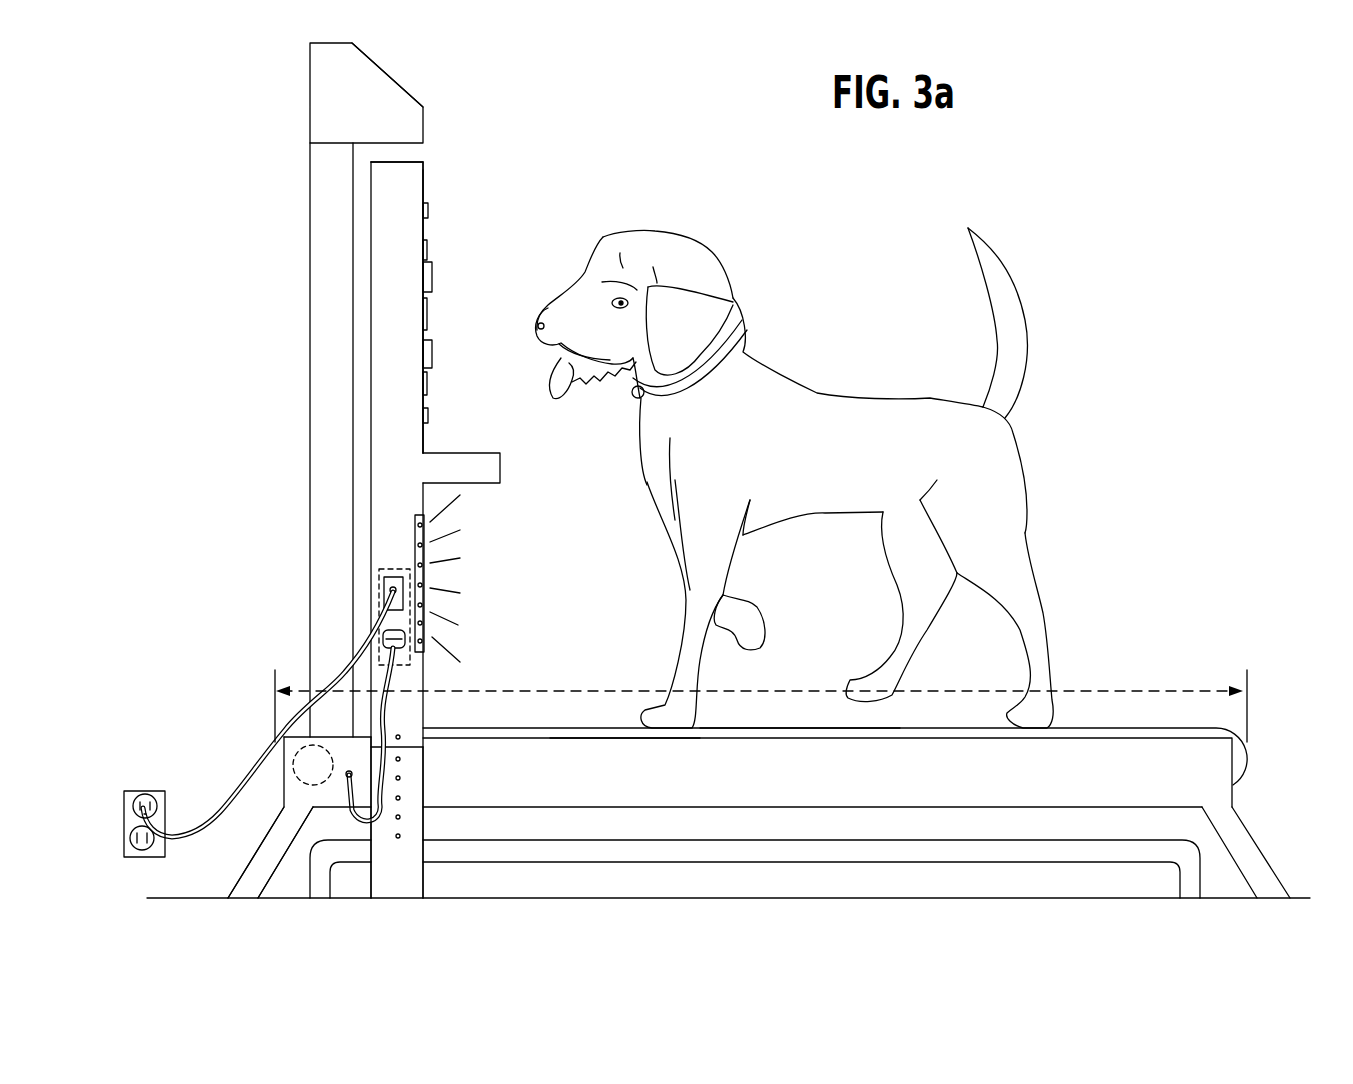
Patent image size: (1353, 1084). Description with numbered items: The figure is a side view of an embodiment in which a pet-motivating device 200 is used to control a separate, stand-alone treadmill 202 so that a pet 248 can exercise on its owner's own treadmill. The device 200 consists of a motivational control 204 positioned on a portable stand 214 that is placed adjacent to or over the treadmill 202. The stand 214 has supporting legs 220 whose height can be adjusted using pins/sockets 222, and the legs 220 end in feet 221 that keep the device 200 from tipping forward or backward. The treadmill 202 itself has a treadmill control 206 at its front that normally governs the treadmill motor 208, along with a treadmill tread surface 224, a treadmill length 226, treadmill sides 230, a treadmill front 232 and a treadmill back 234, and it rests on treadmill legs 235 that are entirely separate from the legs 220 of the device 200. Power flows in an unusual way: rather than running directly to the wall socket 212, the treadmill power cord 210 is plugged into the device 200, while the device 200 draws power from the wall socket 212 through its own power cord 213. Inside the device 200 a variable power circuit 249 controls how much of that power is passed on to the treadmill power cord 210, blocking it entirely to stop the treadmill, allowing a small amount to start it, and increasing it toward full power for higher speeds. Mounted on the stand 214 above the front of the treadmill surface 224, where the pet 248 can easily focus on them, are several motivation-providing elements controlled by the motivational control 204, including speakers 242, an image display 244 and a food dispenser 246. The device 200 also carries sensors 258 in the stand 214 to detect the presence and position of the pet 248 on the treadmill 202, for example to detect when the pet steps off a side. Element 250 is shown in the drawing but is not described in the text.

The device 200 is at (425, 168).
The treadmill 202 is at (309, 121).
The motivational control 204 is at (425, 188).
The treadmill control 206 is at (382, 82).
The treadmill motor 208 is at (308, 768).
The treadmill power cord 210 is at (327, 867).
The wall socket 212 is at (130, 795).
The power cord 213 is at (335, 675).
The stand 214 is at (380, 208).
The supporting legs 220 is at (408, 712).
The feet 221 is at (332, 868).
The pins/sockets 222 is at (401, 737).
The treadmill tread surface 224 is at (787, 727).
The treadmill length 226 is at (622, 690).
The treadmill sides 230 is at (567, 737).
The treadmill front 232 is at (292, 762).
The treadmill back 234 is at (1243, 762).
The treadmill legs 235 is at (275, 842).
The speakers 242 is at (425, 573).
The image display 244 is at (430, 325).
The food dispenser 246 is at (493, 468).
The pet 248 is at (851, 388).
The variable power circuit 249 is at (390, 568).
The indicator 250 is at (430, 212).
The sensors 258 is at (430, 418).